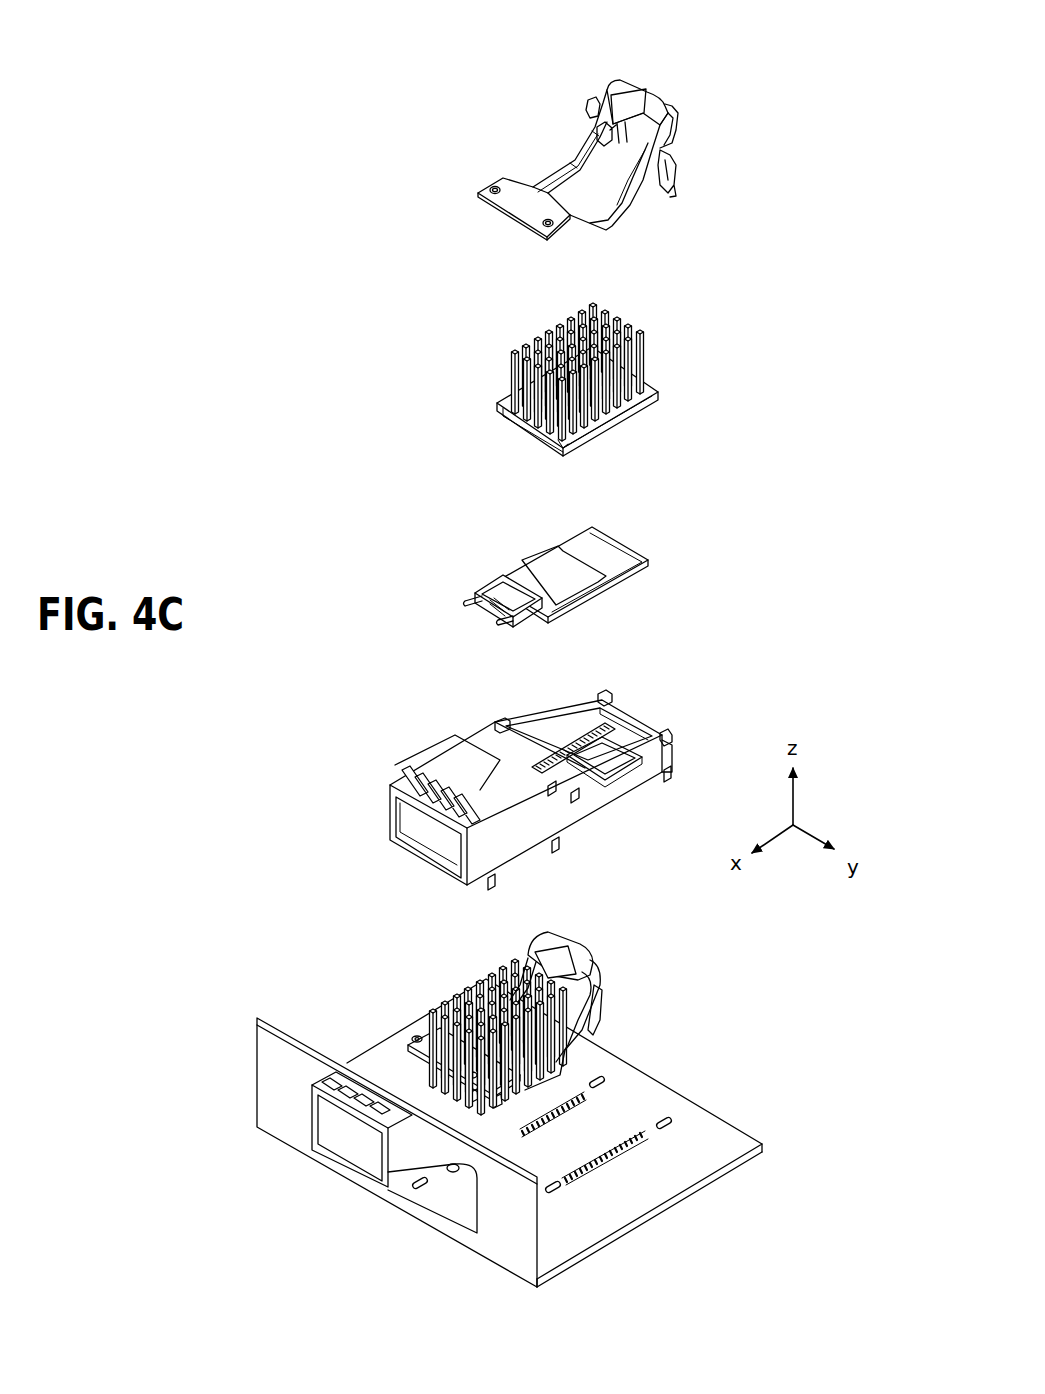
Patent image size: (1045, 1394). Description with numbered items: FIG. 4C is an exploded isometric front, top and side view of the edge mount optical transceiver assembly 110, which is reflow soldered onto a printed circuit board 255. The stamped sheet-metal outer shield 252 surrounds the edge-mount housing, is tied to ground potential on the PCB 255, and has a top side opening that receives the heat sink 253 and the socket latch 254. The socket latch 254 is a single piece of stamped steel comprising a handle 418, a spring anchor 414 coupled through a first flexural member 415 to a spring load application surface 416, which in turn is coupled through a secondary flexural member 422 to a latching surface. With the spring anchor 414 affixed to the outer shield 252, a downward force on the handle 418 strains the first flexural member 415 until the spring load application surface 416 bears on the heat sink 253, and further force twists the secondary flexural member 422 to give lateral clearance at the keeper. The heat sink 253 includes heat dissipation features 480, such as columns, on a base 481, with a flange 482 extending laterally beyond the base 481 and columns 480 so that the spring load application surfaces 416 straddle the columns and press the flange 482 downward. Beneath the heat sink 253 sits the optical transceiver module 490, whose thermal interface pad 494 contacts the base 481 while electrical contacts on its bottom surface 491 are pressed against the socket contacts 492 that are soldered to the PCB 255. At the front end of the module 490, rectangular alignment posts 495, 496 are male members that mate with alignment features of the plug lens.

The edge mount optical transceiver assembly 110 is at (343, 297).
The outer shield 252 is at (442, 747).
The heat sink 253 is at (632, 290).
The socket latch 254 is at (652, 50).
The printed circuit board 255 is at (664, 1183).
The spring anchor 414 is at (480, 197).
The first flexural member 415 is at (505, 173).
The spring load application surface 416 is at (557, 175).
The handle 418 is at (637, 95).
The secondary flexural member 422 is at (593, 122).
The heat dissipation features 480 is at (513, 377).
The base 481 is at (535, 428).
The flange 482 is at (607, 415).
The optical transceiver module 490 is at (630, 520).
The bottom surface 491 is at (608, 603).
The socket contacts 492 is at (573, 733).
The thermal interface pad 494 is at (587, 553).
The alignment post 495 is at (470, 600).
The alignment post 496 is at (505, 623).